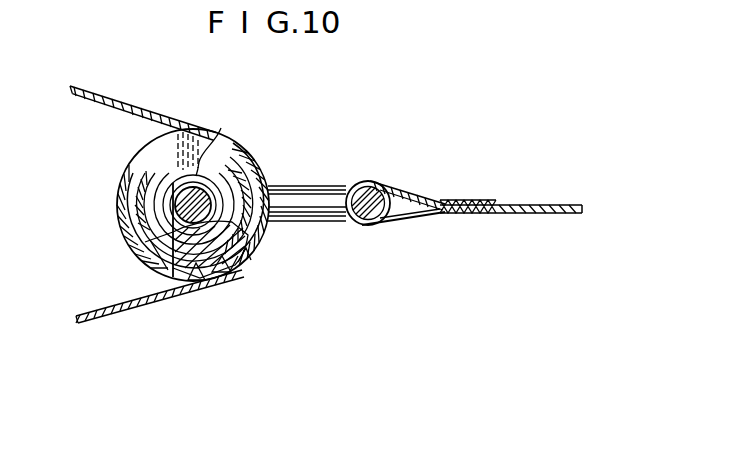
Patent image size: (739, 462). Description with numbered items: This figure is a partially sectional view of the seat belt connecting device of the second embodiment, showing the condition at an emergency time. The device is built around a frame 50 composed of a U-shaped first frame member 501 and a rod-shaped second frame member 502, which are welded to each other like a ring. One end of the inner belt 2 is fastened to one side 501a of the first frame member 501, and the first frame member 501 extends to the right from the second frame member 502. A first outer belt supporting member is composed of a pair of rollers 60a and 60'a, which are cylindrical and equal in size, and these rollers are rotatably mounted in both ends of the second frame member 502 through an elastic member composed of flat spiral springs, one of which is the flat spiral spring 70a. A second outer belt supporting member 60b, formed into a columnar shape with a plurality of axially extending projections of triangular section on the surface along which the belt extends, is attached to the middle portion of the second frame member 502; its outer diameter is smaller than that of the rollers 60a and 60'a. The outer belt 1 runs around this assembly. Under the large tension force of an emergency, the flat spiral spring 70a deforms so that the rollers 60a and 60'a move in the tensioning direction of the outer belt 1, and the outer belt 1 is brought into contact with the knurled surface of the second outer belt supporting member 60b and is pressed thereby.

The outer belt 1 is at (110, 313).
The inner belt 2 is at (437, 196).
The frame 50 is at (305, 177).
The first frame member 501 is at (333, 190).
The one side of the first frame member 501a is at (368, 214).
The second frame member 502 is at (211, 138).
The roller 60a is at (136, 190).
The second outer belt supporting member 60b is at (223, 278).
The roller 60'a is at (162, 296).
The flat spiral spring 70a is at (136, 238).